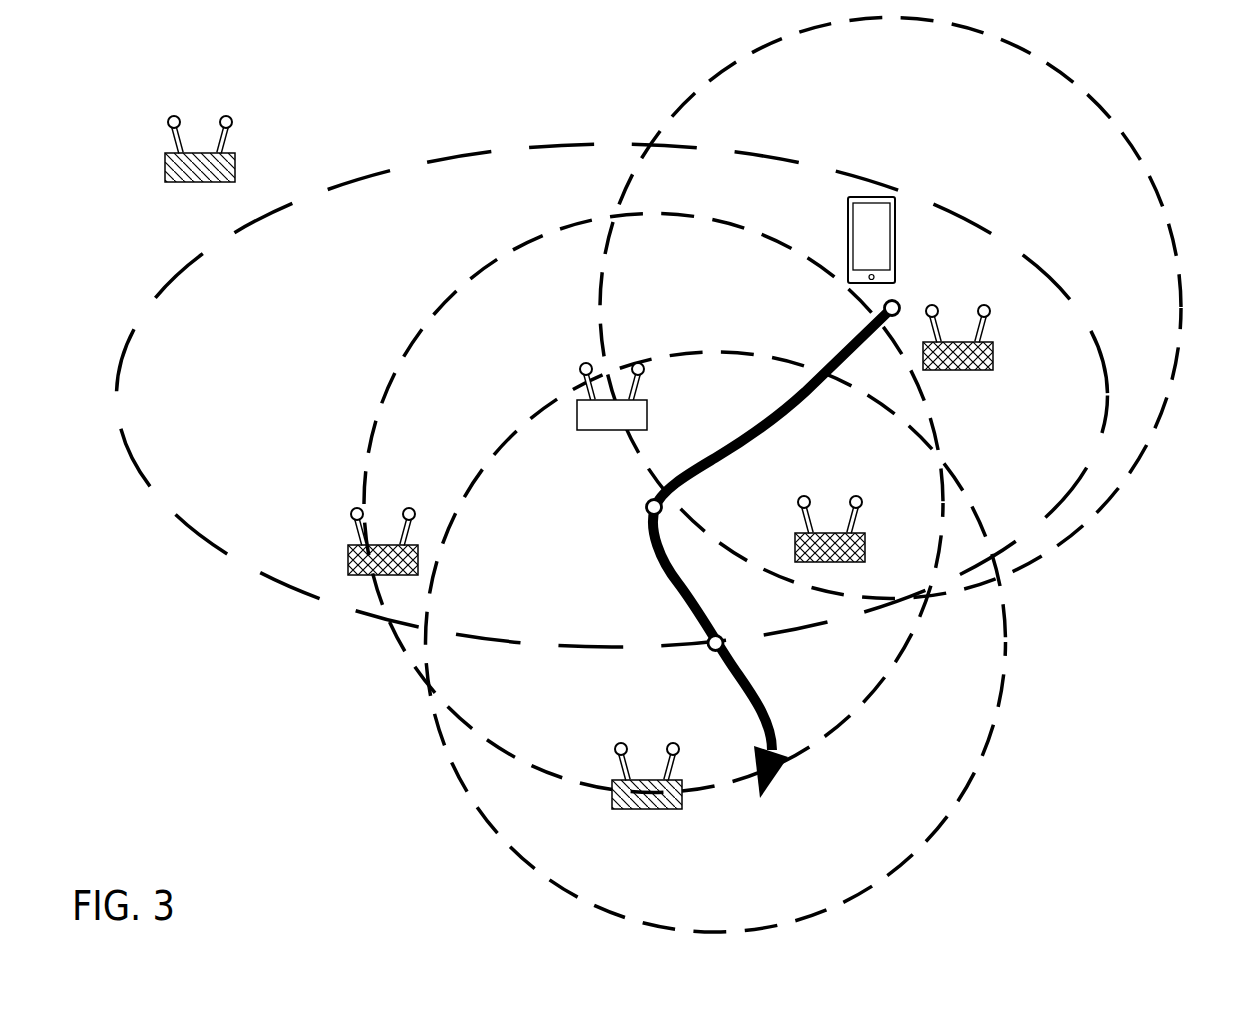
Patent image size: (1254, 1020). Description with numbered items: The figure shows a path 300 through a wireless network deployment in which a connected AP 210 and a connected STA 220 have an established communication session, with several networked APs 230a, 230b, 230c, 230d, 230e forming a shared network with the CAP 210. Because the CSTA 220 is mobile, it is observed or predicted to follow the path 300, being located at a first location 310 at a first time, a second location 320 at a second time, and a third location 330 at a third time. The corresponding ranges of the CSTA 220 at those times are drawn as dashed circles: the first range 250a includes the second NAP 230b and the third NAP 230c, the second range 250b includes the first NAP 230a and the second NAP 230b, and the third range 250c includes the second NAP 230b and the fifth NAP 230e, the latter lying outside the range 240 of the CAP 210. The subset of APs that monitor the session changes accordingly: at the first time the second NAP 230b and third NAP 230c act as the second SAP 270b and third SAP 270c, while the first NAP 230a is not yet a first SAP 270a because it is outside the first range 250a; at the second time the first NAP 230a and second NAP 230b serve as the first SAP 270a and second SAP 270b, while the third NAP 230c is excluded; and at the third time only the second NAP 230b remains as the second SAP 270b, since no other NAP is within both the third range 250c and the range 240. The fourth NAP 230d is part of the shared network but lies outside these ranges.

The connected AP (CAP) 210 is at (577, 418).
The connected STA (CSTA) 220 is at (893, 223).
The first NAP 230a is at (331, 527).
The second NAP 230b is at (859, 503).
The third NAP 230c is at (1003, 378).
The fourth NAP 230d is at (235, 163).
The fifth NAP 230e is at (611, 750).
The range of the CAP 240 is at (320, 598).
The first range 250a is at (1163, 207).
The second range 250b is at (527, 240).
The third range 250c is at (998, 707).
The first SAP 270a is at (348, 558).
The second SAP 270b is at (865, 533).
The third SAP 270c is at (993, 370).
The path 300 is at (677, 592).
The first location 310 is at (893, 301).
The second location 320 is at (650, 508).
The third location 330 is at (717, 637).